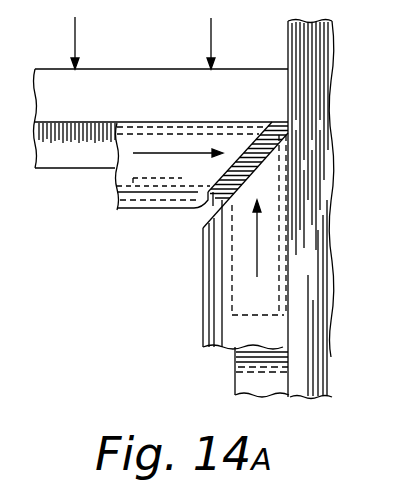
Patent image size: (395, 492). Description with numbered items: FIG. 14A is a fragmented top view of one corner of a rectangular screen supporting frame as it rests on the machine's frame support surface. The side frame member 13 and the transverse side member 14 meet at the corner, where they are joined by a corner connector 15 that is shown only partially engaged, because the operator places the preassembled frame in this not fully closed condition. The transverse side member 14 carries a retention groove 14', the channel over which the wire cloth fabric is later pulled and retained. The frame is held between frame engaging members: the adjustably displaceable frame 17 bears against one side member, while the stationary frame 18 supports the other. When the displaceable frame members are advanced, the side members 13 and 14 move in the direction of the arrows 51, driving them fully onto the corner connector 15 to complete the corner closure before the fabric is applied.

The adjustably displaceable frame 17 is at (142, 77).
The arrows 51 is at (160, 157).
The corner connector 15 is at (262, 151).
The side frame member 13 is at (150, 170).
The retention groove 14' is at (179, 282).
The transverse side member 14 is at (290, 274).
The stationary frame 18 is at (278, 377).